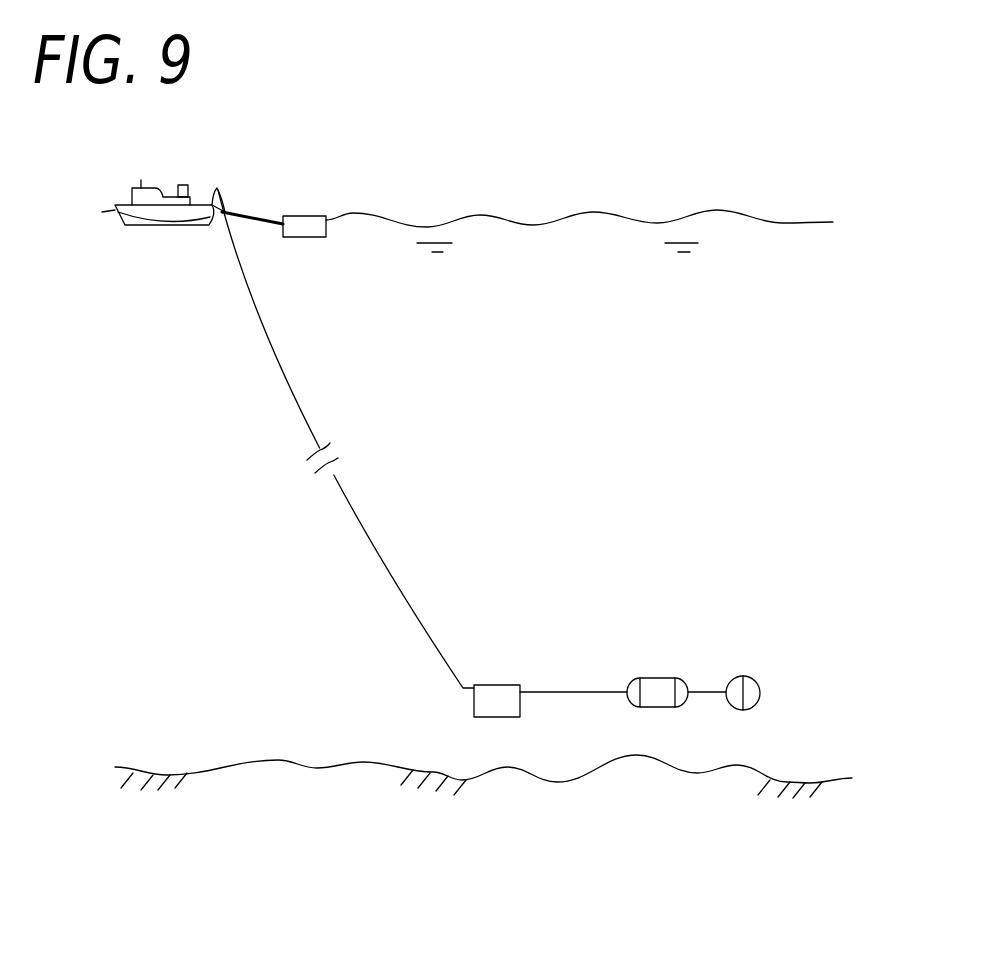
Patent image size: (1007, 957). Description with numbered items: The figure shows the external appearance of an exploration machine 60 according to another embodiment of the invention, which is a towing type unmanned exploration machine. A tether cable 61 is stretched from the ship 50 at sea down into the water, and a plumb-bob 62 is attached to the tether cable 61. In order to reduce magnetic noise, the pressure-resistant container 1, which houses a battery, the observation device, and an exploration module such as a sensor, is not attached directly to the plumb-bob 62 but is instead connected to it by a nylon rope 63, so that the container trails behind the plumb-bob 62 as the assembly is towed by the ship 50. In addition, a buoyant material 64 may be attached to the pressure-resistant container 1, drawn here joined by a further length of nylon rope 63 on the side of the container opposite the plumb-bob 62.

The ship 50 is at (161, 212).
The cable 61 is at (367, 520).
The weight 62 is at (492, 700).
The rope 63 is at (562, 692).
The underwater device 1 is at (655, 662).
The device body 60 is at (650, 687).
The float 64 is at (752, 682).